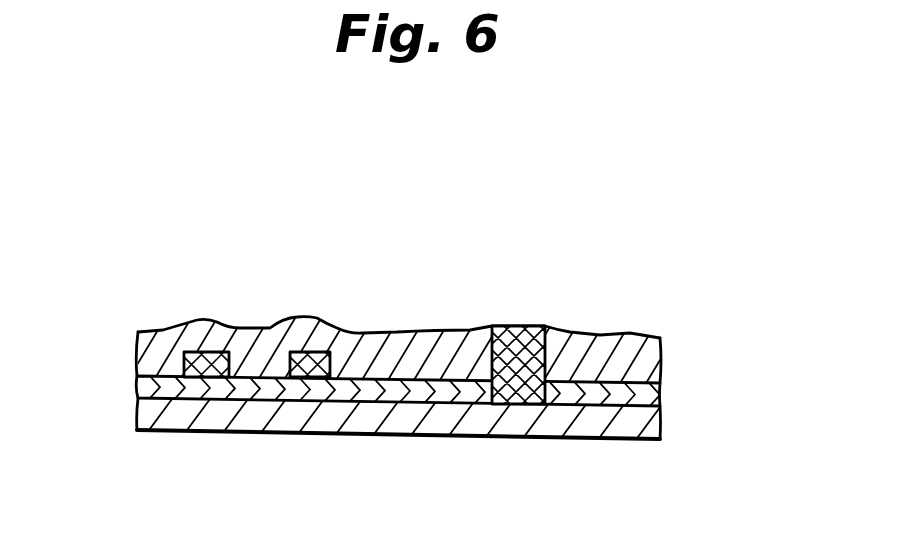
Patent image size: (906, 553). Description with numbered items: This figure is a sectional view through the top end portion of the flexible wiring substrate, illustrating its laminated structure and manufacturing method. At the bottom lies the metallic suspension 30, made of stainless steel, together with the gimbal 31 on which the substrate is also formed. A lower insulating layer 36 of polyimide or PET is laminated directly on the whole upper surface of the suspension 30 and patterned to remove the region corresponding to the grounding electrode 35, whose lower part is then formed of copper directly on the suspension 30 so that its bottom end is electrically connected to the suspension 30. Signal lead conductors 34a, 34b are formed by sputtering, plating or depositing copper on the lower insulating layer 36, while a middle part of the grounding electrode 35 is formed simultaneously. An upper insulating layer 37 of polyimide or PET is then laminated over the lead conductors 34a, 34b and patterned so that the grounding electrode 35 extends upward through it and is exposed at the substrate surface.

The metallic suspension 30 is at (422, 441).
The gimbal 31 is at (621, 436).
The signal lead conductor 34a is at (205, 355).
The signal lead conductor 34b is at (308, 355).
The grounding electrode 35 is at (507, 332).
The lower insulating layer 36 is at (140, 380).
The upper insulating layer 37 is at (137, 347).